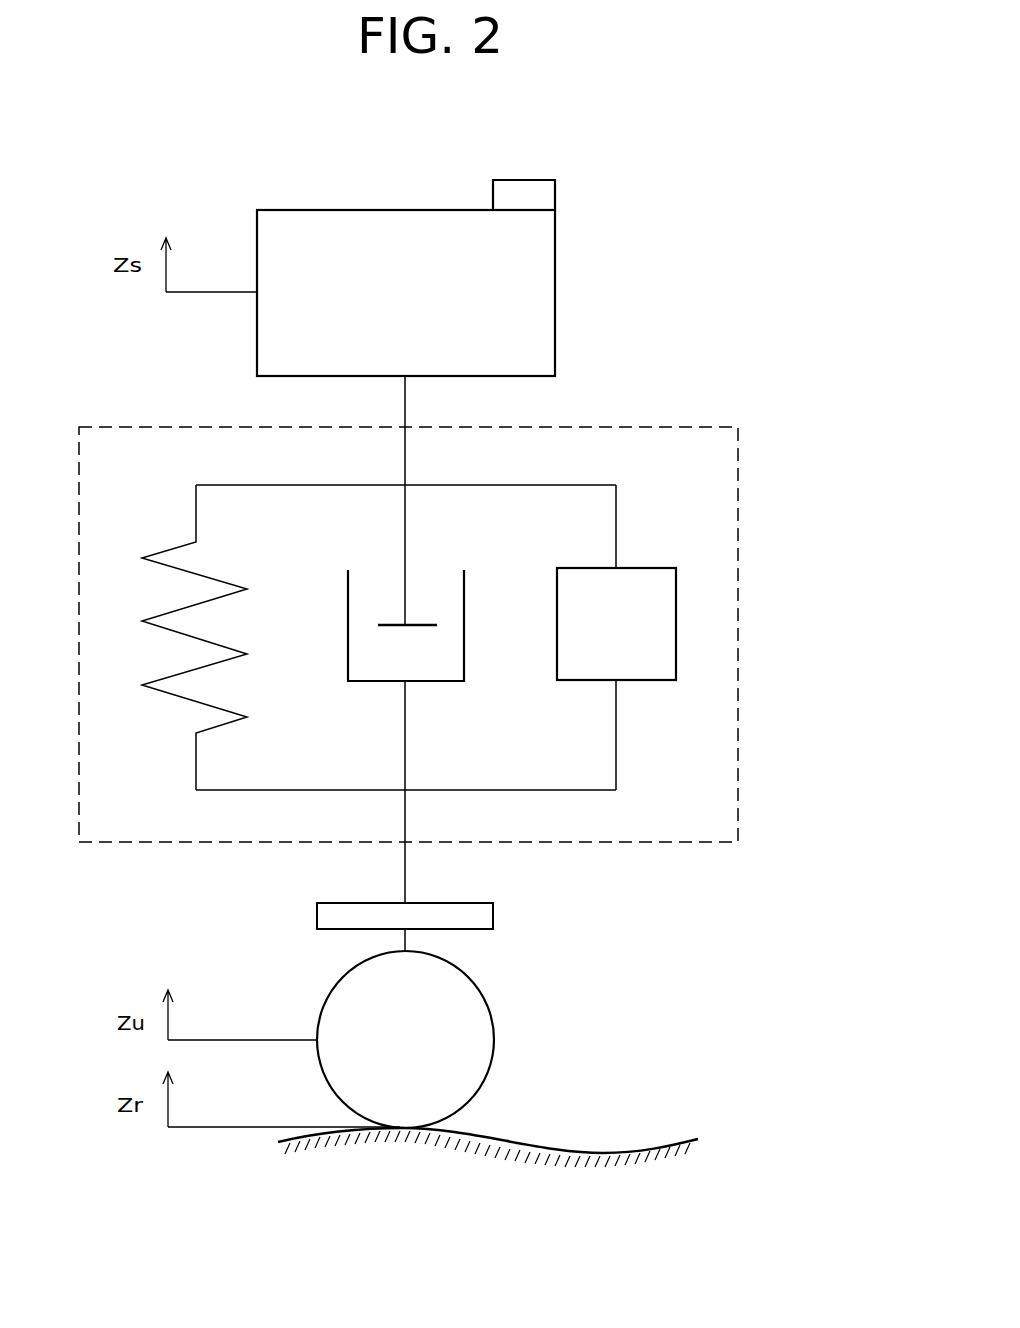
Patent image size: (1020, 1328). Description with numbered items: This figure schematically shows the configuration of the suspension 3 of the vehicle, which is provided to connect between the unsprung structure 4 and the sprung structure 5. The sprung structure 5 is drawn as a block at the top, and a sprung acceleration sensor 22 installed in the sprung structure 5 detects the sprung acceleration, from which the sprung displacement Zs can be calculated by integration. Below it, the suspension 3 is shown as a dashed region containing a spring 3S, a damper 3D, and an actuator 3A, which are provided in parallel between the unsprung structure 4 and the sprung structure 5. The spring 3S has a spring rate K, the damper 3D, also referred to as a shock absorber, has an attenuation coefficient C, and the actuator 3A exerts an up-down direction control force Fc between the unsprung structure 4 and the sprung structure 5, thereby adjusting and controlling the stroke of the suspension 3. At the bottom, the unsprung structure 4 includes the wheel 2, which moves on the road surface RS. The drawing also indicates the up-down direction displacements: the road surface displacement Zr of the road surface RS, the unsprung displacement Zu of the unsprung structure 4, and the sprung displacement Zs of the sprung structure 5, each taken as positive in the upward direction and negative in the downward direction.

The sprung acceleration sensor 22 is at (556, 192).
The sprung structure 5 is at (556, 277).
The suspension 3 is at (641, 426).
The spring 3S is at (180, 542).
The damper 3D is at (386, 584).
The actuator 3A is at (641, 568).
The wheel 2 is at (567, 1123).
The unsprung structure 4 is at (553, 1013).
The road surface RS is at (478, 1148).